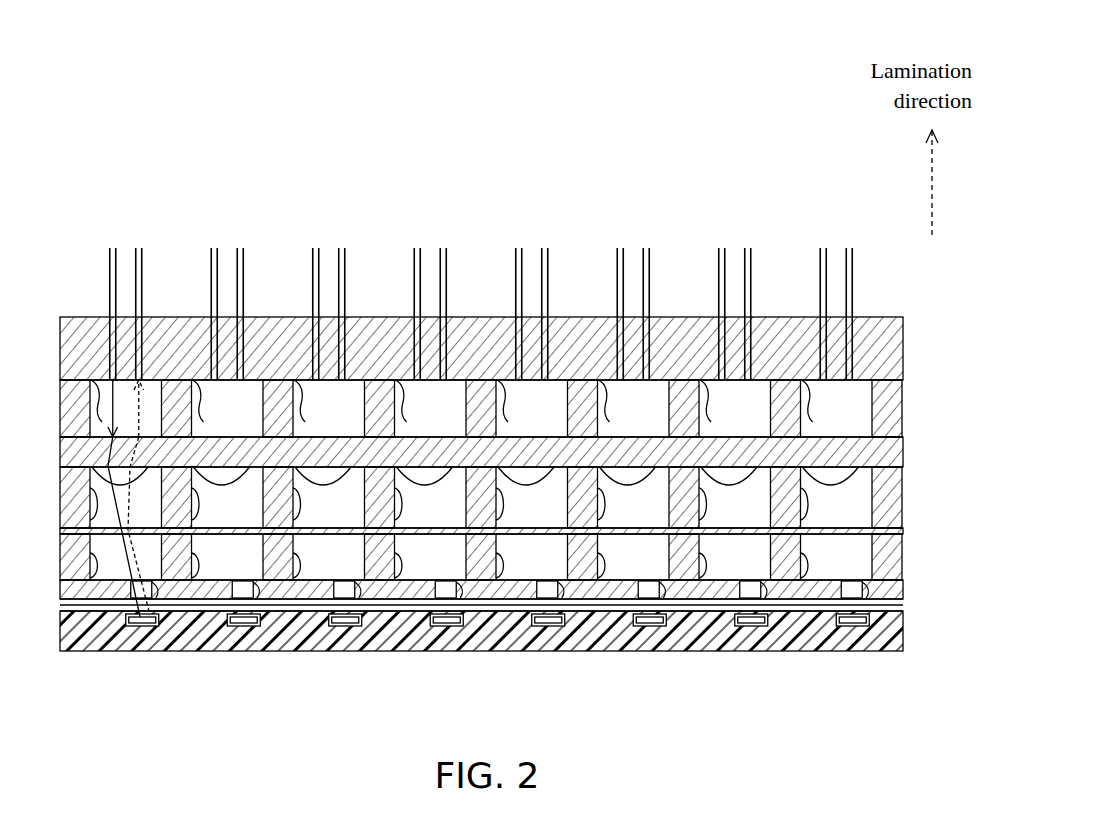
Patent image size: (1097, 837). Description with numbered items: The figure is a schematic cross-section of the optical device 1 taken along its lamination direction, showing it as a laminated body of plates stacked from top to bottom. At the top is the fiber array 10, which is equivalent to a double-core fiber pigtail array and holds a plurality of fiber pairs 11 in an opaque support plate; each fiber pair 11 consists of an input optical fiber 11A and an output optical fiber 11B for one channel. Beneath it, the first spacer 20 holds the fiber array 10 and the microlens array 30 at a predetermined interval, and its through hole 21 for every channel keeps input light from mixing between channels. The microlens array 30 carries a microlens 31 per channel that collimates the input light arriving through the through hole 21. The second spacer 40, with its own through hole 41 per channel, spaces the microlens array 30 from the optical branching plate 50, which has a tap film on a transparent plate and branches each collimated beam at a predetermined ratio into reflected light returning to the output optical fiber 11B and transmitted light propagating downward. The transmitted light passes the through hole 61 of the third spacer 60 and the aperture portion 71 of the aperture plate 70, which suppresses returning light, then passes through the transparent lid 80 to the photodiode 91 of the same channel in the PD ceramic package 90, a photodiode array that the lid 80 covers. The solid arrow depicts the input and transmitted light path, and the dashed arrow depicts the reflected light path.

The optical device 1 is at (769, 84).
The fiber array 10 is at (903, 317).
The fiber pair 11 is at (481, 163).
The input optical fiber 11A is at (457, 288).
The output optical fiber 11B is at (505, 288).
The first spacer 20 is at (903, 380).
The through hole 21 is at (86, 318).
The microlens array 30 is at (903, 437).
The microlens 31 is at (880, 465).
The second spacer 40 is at (903, 467).
The through hole 41 is at (95, 522).
The optical branching plate 50 is at (903, 530).
The third spacer 60 is at (903, 540).
The through hole 61 is at (479, 617).
The aperture plate 70 is at (903, 590).
The aperture portion 71 is at (515, 633).
The lid 80 is at (903, 605).
The PD ceramic package 90 is at (903, 651).
The photodiode 91 is at (498, 657).